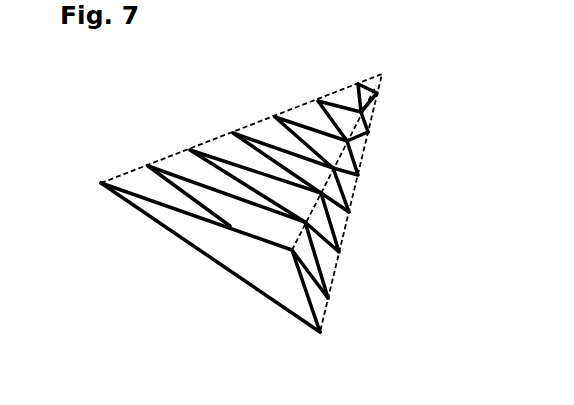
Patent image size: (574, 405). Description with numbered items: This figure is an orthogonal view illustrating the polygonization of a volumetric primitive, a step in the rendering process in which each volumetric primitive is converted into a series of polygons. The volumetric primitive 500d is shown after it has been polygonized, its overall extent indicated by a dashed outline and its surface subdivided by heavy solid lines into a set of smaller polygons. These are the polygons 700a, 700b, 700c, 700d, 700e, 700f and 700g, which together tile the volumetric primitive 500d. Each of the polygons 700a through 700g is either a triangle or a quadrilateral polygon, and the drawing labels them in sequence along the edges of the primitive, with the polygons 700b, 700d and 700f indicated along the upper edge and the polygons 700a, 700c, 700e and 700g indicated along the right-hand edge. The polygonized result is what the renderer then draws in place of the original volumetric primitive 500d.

The volumetric primitive 500d is at (257, 290).
The polygon 700a is at (322, 333).
The polygon 700b is at (148, 167).
The polygon 700c is at (339, 252).
The polygon 700d is at (232, 133).
The polygon 700e is at (358, 175).
The polygon 700f is at (318, 101).
The polygon 700g is at (377, 94).